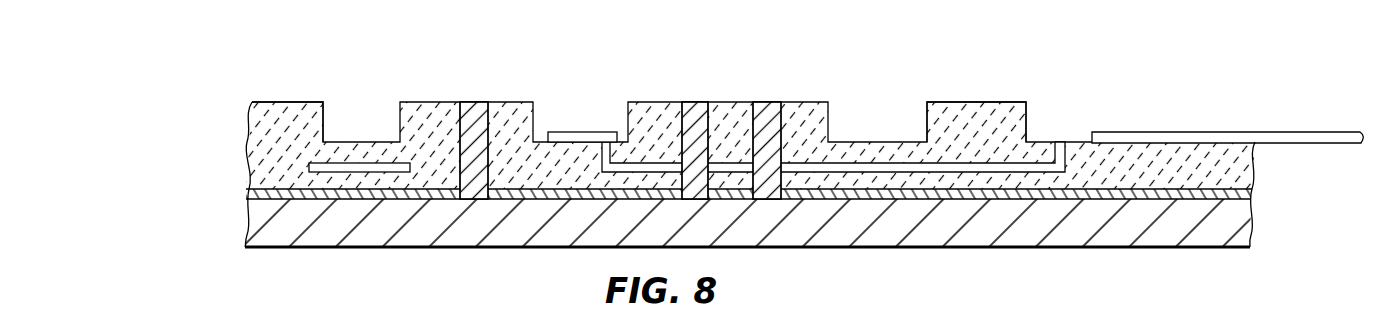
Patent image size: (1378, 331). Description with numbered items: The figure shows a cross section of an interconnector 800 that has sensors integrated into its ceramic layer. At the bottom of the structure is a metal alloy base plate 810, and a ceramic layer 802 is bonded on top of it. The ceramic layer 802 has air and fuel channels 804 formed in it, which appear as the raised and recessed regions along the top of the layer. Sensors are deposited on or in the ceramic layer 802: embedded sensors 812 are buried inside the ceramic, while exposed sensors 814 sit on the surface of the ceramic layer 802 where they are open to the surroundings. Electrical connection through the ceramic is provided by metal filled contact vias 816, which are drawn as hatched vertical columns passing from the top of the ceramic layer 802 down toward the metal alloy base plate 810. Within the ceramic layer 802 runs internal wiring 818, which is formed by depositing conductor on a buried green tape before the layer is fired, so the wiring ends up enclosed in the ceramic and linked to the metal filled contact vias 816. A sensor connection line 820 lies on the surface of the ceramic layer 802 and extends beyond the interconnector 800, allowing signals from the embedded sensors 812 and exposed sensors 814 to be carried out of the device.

The interconnector 800 is at (230, 95).
The ceramic layer 802 is at (262, 147).
The air and fuel channels 804 is at (325, 112).
The metal alloy base plate 810 is at (297, 235).
The embedded sensors 812 is at (352, 162).
The exposed sensors 814 is at (566, 132).
The metal filled contact vias 816 is at (472, 103).
The internal wiring 818 is at (850, 162).
The sensor connection line 820 is at (1180, 132).